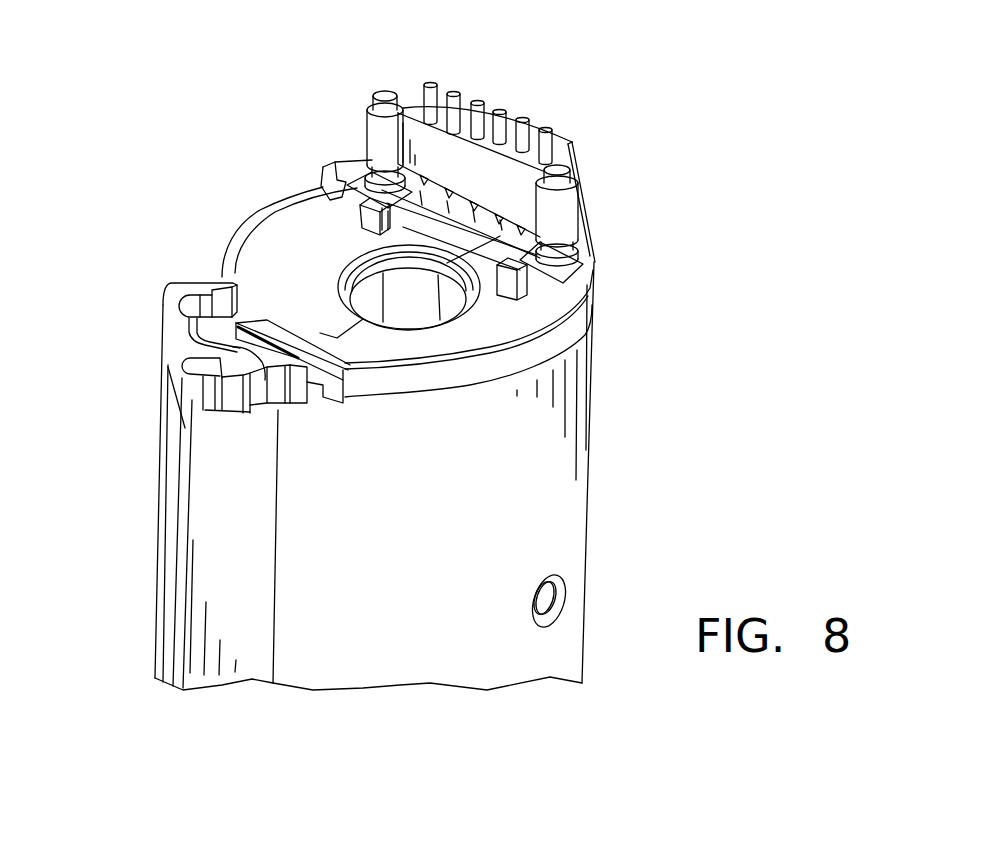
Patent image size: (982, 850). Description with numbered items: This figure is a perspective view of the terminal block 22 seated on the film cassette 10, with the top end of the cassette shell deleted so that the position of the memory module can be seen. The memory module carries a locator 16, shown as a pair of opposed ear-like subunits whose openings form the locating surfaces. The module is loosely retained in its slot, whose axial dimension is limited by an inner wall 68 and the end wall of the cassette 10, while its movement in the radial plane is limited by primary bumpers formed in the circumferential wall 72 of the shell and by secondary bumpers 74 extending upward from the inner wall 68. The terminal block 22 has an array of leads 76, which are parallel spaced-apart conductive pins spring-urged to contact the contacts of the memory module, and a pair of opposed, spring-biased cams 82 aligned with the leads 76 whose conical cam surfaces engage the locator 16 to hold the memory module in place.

The film cassette 10 is at (130, 425).
The locator 16 is at (310, 190).
The terminal block 22 is at (583, 138).
The inner wall 68 is at (262, 262).
The circumferential wall 72 is at (583, 423).
The secondary bumpers 74 is at (363, 213).
The leads 76 is at (452, 87).
The cams 82 is at (388, 92).